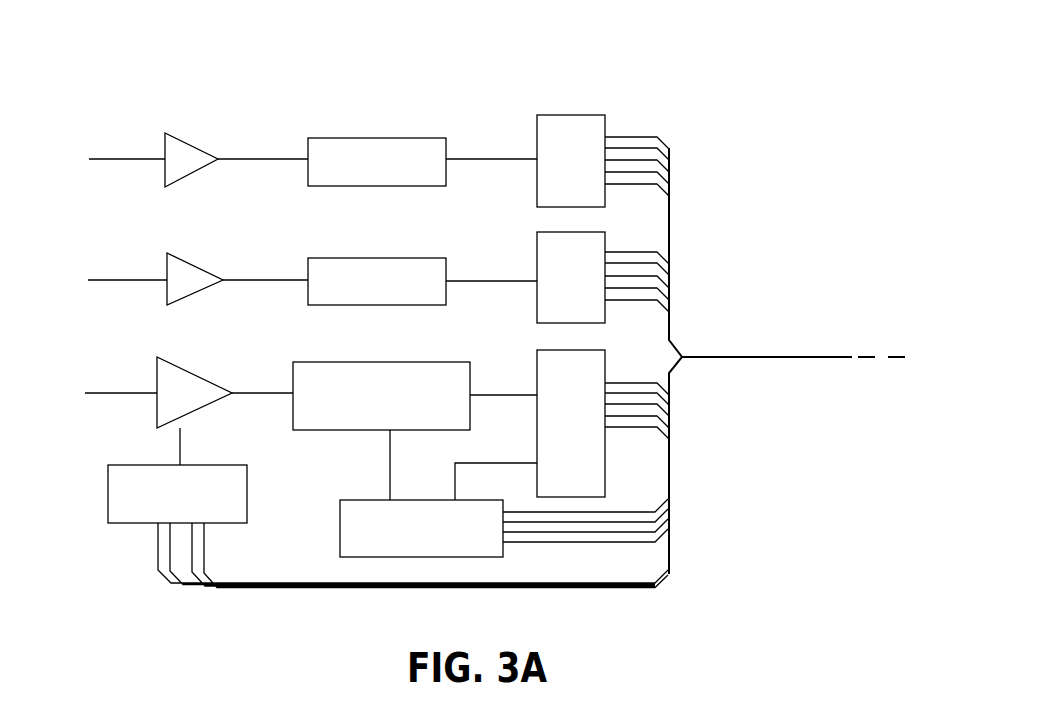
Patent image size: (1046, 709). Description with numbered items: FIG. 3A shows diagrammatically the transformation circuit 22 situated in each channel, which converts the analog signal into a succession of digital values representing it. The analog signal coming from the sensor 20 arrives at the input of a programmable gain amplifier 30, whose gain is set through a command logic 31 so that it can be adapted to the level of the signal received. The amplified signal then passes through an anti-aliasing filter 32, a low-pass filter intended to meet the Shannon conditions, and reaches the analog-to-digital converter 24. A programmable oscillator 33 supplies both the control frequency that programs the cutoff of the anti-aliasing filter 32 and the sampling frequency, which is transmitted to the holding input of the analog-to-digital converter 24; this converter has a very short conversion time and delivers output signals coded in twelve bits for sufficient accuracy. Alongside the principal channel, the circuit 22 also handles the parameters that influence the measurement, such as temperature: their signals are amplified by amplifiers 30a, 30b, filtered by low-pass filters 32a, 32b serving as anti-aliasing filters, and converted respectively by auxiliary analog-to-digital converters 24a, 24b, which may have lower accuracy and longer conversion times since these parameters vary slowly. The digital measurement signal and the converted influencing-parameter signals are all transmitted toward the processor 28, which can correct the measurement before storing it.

The transformation circuit 22 is at (503, 96).
The sensor 20 is at (121, 390).
The analog-to-digital converter 24 is at (537, 367).
The analog-to-digital converter 24a is at (597, 115).
The analog-to-digital converter 24b is at (533, 250).
The processor 28 is at (787, 361).
The programmable gain amplifier 30 is at (157, 408).
The amplifier 30a is at (198, 172).
The amplifier 30b is at (167, 295).
The command logic 31 is at (247, 515).
The anti-aliasing filter 32 is at (333, 362).
The low-pass filter 32a is at (333, 138).
The low-pass filter 32b is at (333, 258).
The programmable oscillator 33 is at (340, 500).